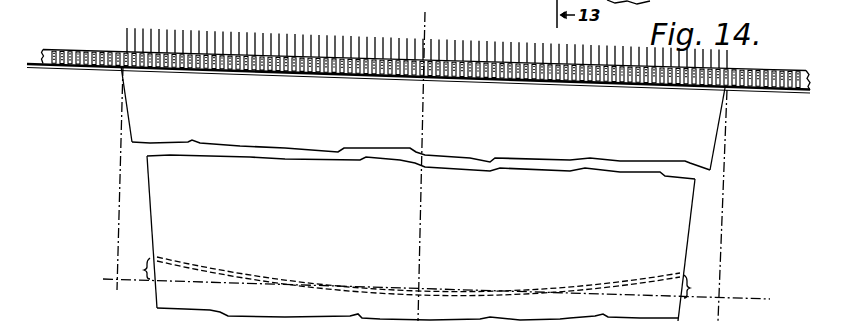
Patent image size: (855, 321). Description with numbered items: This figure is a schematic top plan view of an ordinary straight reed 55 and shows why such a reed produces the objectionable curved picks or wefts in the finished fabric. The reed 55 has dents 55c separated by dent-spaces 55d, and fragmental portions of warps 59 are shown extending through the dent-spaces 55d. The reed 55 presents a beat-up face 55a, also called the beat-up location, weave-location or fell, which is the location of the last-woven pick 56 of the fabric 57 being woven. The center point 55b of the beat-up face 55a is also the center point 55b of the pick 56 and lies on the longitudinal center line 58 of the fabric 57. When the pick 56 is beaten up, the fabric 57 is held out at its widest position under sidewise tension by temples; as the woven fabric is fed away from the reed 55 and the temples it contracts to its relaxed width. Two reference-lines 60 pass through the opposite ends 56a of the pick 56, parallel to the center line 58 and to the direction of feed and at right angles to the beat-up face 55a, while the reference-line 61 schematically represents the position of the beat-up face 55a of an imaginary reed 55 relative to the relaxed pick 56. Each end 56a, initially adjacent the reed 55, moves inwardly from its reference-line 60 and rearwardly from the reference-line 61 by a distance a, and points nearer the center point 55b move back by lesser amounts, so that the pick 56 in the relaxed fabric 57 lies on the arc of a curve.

The straight reed 55 is at (781, 91).
The beat-up face 55a is at (555, 80).
The center point 55b is at (428, 79).
The dents 55c is at (61, 50).
The dent-spaces 55d is at (103, 51).
The pick 56 is at (367, 78).
The opposite ends of the pick 56a is at (121, 72).
The fabric 57 is at (147, 157).
The longitudinal center line 58 is at (418, 208).
The warps 59 is at (263, 41).
The reference-lines 60 is at (117, 214).
The reference-line 61 is at (77, 272).